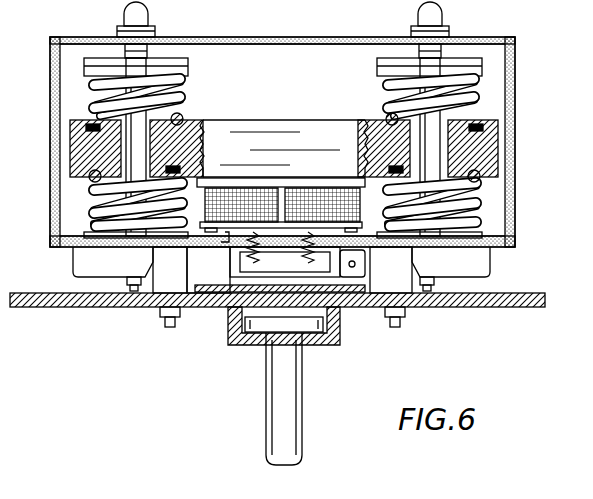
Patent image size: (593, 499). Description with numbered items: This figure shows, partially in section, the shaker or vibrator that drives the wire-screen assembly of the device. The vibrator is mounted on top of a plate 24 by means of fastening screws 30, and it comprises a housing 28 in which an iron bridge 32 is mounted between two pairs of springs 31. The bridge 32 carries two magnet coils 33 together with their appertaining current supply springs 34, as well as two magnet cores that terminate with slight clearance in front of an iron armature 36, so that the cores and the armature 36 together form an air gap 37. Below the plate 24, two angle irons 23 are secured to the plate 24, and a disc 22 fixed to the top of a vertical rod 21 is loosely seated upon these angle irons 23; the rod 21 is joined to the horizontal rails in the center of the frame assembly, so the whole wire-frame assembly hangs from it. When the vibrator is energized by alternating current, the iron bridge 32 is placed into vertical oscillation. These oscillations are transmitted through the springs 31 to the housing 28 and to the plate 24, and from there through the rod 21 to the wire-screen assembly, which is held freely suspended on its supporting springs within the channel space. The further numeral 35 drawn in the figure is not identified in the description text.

The vertical rod 21 is at (290, 417).
The disc 22 is at (258, 333).
The angle irons 23 is at (230, 347).
The plate 24 is at (473, 308).
The housing 28 is at (505, 73).
The fastening screws 30 is at (400, 320).
The springs 31 is at (460, 200).
The iron bridge 32 is at (272, 128).
The magnet coils 33 is at (293, 183).
The current supply springs 34 is at (250, 247).
The wire bracket 35 is at (227, 232).
The iron armature 36 is at (288, 258).
The air gap 37 is at (340, 268).